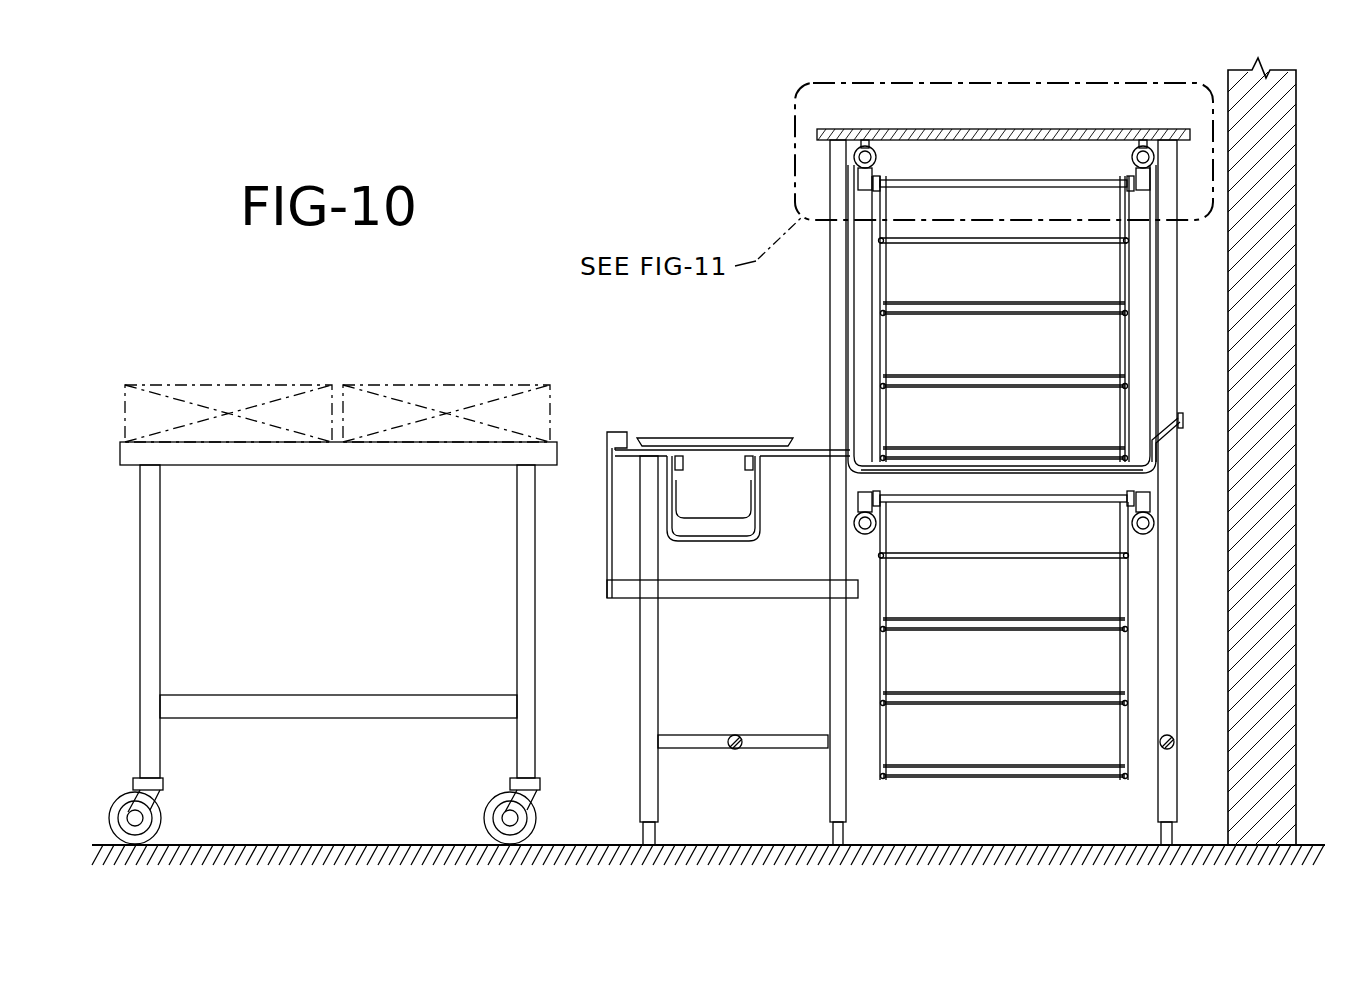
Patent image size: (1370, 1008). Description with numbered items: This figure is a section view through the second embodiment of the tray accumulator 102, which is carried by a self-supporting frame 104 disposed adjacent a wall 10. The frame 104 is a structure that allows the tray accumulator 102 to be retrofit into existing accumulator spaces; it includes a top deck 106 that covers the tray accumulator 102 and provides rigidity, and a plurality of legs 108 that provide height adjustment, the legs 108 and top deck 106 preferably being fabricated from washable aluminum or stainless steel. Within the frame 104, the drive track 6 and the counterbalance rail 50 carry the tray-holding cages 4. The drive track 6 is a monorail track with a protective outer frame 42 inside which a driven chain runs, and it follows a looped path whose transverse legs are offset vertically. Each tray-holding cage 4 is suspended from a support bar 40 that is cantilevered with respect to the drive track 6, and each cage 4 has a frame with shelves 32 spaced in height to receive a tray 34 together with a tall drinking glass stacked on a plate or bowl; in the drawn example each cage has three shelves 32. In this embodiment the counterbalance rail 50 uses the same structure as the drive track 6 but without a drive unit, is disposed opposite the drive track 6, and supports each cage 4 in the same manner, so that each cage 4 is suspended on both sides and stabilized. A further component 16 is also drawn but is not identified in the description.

The wall 10 is at (1287, 132).
The legs 108 is at (1170, 383).
The frame 104 is at (1042, 122).
The top deck 106 is at (912, 128).
The tray accumulator 102 is at (818, 170).
The counterbalance rail 50 is at (853, 390).
The support bar 40 is at (975, 180).
The protective outer frame 42 is at (862, 290).
The tray 34 is at (700, 437).
The shelves 32 is at (968, 314).
The bottom bracket 16 is at (1020, 475).
The drive track 6 is at (1125, 520).
The tray-holding cage 4 is at (873, 340).